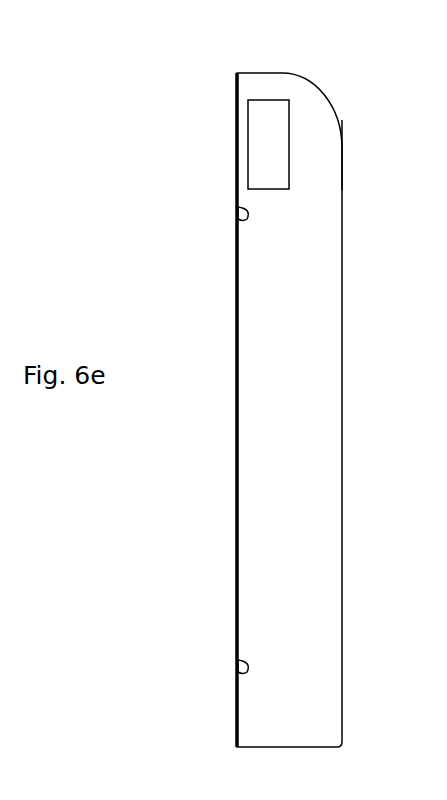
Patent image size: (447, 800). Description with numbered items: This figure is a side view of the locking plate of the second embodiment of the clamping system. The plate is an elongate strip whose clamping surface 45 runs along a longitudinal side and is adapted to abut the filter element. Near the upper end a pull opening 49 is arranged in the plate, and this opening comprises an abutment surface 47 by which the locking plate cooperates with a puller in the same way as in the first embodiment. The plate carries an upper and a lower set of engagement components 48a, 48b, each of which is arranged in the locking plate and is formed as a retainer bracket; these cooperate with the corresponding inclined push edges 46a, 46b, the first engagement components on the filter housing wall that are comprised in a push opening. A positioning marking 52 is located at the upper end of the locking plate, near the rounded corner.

The clamping surface 45 is at (238, 275).
The inclined push edge 46a is at (247, 218).
The inclined push edge 46b is at (247, 671).
The abutment surface 47 is at (268, 100).
The second engagement component 48a is at (243, 210).
The second engagement component 48b is at (247, 667).
The pull opening 49 is at (275, 165).
The positioning marking 52 is at (327, 155).